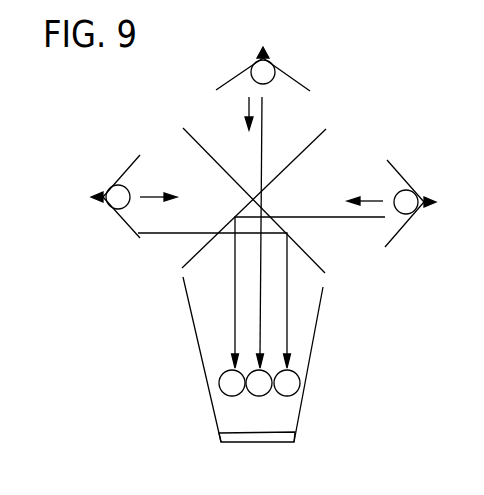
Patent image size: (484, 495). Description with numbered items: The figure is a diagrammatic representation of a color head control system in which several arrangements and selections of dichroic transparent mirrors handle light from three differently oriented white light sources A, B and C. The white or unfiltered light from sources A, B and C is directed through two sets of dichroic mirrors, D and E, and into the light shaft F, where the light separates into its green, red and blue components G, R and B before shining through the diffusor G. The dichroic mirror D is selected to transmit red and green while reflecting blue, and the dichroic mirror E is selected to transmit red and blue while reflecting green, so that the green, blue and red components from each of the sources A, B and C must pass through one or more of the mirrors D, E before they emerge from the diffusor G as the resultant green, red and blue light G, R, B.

The white light source A is at (263, 207).
The white light source B is at (334, 278).
The white light source C is at (191, 261).
The dichroic mirror D is at (256, 193).
The dichroic mirror E is at (249, 195).
The light shaft F is at (253, 359).
The diffusor G is at (257, 423).
The red light component R is at (259, 383).